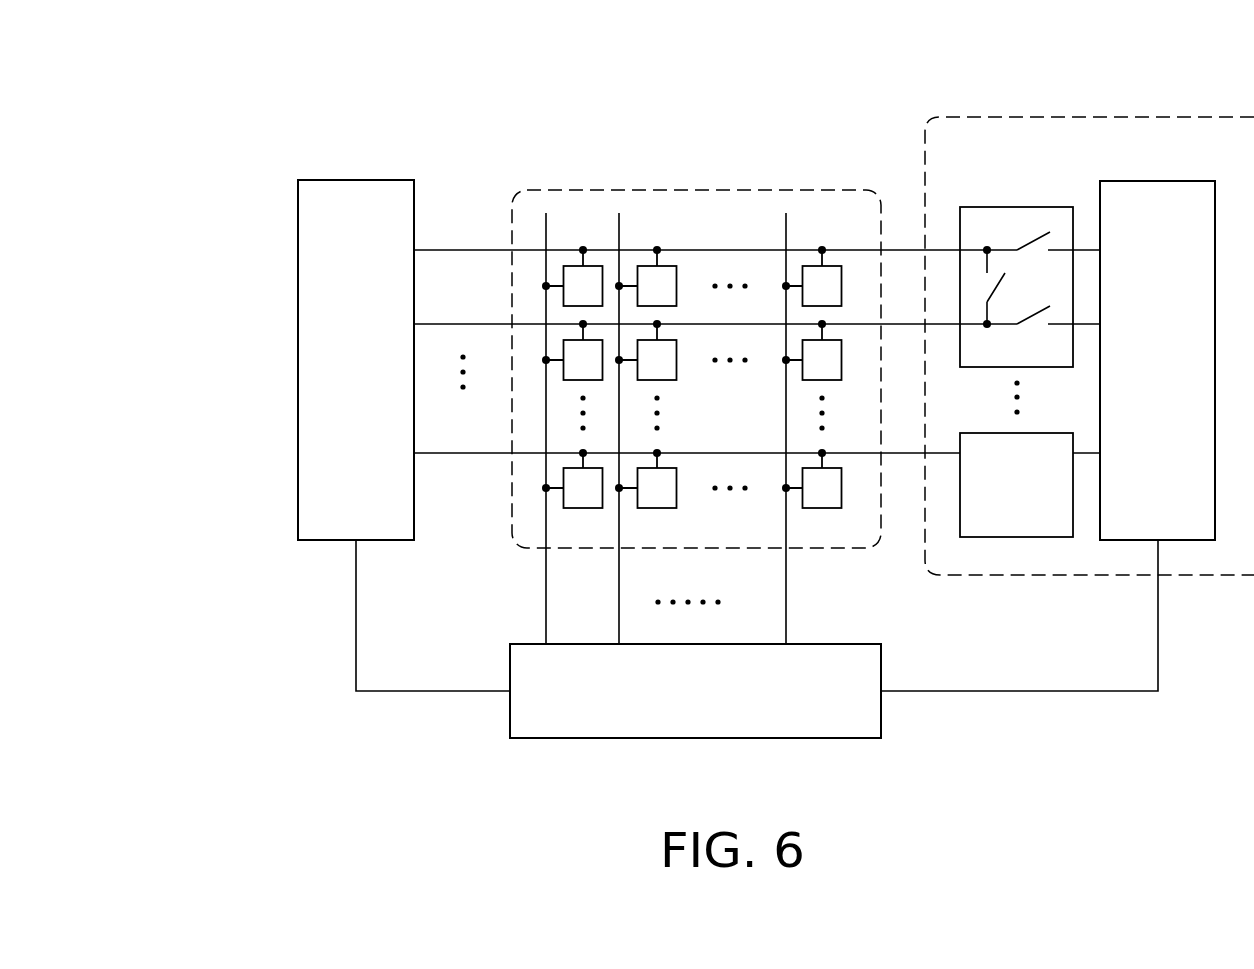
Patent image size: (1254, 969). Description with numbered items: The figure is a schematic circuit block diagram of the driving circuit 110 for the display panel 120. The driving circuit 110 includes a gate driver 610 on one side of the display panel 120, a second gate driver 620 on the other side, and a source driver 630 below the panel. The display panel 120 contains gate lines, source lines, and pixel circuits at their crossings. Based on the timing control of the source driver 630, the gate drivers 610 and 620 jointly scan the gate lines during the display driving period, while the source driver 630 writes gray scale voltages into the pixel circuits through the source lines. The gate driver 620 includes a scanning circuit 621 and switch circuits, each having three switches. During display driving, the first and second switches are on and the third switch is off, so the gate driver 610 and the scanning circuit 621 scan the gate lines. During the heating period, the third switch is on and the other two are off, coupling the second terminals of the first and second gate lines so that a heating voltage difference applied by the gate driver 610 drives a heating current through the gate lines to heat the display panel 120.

The driving circuit 110 is at (171, 592).
The display panel 120 is at (698, 190).
The gate driver 610 is at (357, 180).
The gate driver 620 is at (1110, 117).
The scanning circuit 621 is at (1157, 181).
The source driver 630 is at (695, 738).